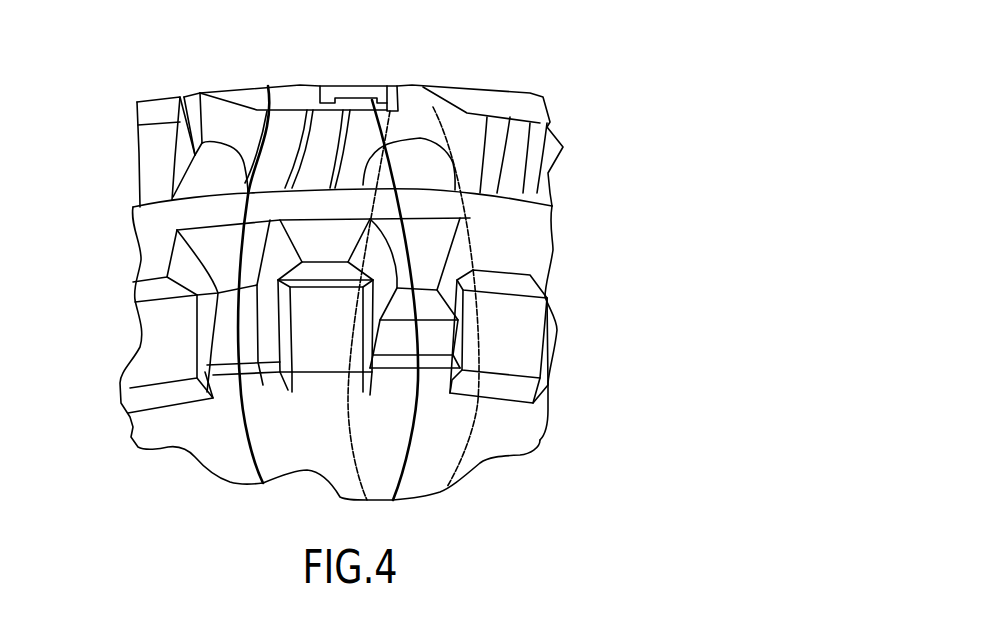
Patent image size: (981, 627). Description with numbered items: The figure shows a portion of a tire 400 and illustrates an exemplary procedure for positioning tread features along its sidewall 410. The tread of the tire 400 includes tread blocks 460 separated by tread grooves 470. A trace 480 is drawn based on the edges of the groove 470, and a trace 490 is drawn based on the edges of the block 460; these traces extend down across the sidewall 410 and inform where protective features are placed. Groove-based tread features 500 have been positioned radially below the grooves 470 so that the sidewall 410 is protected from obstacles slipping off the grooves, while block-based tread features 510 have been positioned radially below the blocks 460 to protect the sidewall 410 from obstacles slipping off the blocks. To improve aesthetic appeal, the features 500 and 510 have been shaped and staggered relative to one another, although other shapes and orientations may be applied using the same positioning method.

The tire 400 is at (572, 83).
The sidewall 410 is at (572, 255).
The tread blocks 460 is at (160, 132).
The tread grooves 470 is at (210, 175).
The trace 480 is at (357, 460).
The trace 490 is at (248, 435).
The groove-based tread features 500 is at (423, 248).
The block-based tread features 510 is at (317, 310).